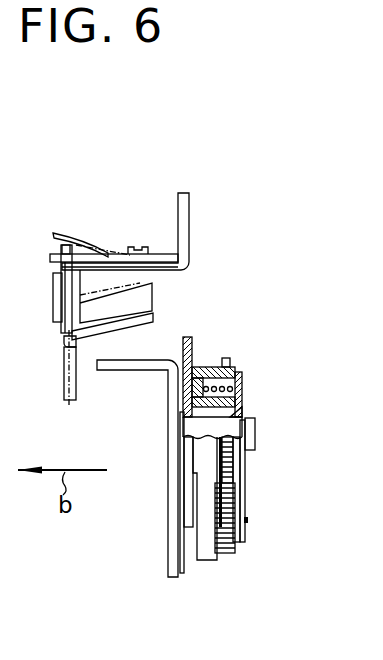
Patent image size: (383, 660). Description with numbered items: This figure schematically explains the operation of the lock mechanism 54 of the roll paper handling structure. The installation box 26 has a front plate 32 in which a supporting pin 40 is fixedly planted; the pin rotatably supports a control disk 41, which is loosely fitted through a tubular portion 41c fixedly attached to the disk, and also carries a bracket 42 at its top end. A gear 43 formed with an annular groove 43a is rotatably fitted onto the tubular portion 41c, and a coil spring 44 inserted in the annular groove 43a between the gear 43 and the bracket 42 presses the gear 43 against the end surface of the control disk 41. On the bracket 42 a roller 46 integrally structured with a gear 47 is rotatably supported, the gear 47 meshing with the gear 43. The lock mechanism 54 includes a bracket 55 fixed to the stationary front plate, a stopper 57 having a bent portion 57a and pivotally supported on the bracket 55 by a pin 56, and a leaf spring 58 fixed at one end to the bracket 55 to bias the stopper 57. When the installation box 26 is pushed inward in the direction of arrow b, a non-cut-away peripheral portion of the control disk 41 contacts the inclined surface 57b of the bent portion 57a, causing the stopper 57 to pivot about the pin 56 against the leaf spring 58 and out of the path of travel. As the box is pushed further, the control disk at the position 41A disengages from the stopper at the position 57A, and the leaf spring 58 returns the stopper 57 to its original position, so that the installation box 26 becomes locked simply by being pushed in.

The lock mechanism 54 is at (66, 204).
The bracket 55 is at (189, 225).
The leaf spring 58 is at (50, 258).
The stopper (displaced position) 57A is at (153, 295).
The pin 56 is at (53, 305).
The stopper 57 is at (63, 328).
The inclined surface 57b is at (108, 328).
The bent portion 57a is at (67, 348).
The control disk (disengaged position) 41A is at (65, 393).
The control disk 41 is at (193, 337).
The gear 43 is at (229, 366).
The annular groove 43a is at (208, 382).
The coil spring 44 is at (234, 385).
The tubular portion 41c is at (238, 410).
The supporting pin 40 is at (190, 427).
The installation box 26 is at (125, 369).
The front plate 32 is at (182, 505).
The roller 46 is at (203, 561).
The gear 47 is at (228, 554).
The bracket 42 is at (239, 485).